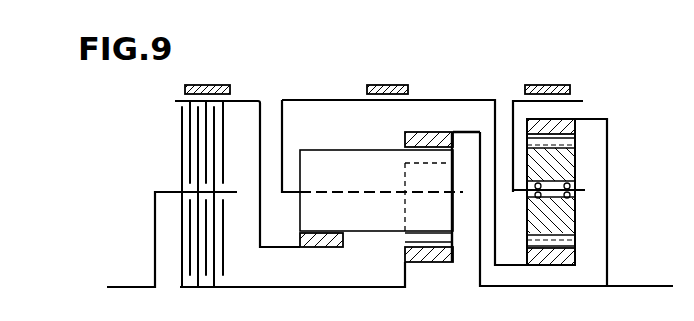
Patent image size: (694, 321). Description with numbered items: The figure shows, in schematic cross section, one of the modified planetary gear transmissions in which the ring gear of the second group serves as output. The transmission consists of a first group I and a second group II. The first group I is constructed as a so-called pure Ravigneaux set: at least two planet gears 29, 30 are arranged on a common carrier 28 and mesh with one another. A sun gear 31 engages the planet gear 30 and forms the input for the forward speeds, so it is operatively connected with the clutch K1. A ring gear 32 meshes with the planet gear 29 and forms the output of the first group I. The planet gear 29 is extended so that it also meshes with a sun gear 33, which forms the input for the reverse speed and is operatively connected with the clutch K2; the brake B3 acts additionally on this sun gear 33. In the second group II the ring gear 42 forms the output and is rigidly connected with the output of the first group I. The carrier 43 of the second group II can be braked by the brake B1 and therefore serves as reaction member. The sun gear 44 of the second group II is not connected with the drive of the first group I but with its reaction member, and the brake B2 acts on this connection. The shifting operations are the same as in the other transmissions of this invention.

The first group I is at (304, 97).
The second group II is at (588, 178).
The common carrier 28 is at (284, 138).
The planet gear 29 is at (372, 162).
The planet gear 30 is at (413, 236).
The sun gear 31 is at (428, 265).
The ring gear 32 is at (441, 131).
The sun gear 33 is at (333, 242).
The ring gear 42 is at (562, 130).
The carrier 43 is at (517, 191).
The sun gear 44 is at (557, 259).
The clutch K1 is at (202, 228).
The clutch K2 is at (213, 160).
The brake B1 is at (530, 85).
The brake B2 is at (373, 85).
The brake B3 is at (209, 85).